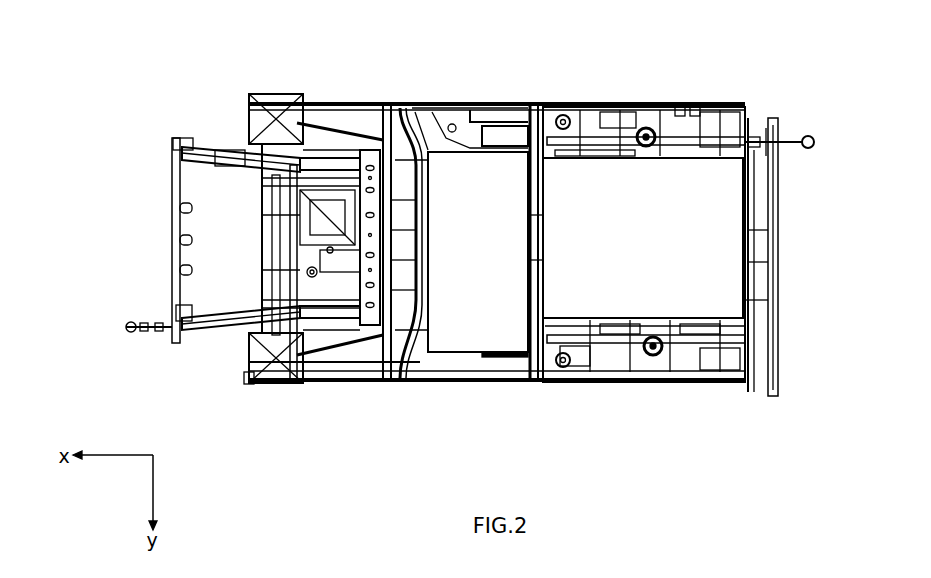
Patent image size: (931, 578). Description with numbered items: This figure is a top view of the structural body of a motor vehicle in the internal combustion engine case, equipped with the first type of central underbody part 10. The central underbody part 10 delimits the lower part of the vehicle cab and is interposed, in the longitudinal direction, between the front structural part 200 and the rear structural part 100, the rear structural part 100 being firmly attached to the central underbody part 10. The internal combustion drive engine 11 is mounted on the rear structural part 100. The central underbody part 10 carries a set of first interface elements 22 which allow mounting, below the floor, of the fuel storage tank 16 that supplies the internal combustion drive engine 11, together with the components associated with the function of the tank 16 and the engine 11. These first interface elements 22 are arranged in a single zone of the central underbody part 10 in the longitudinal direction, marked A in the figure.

The central underbody part 10 is at (403, 92).
The internal combustion drive engine 11 is at (730, 234).
The fuel storage tank 16 is at (455, 330).
The set of first interface elements 22 is at (471, 172).
The rear structural part 100 is at (535, 85).
The front structural part 200 is at (160, 82).
The single zone A is at (525, 389).